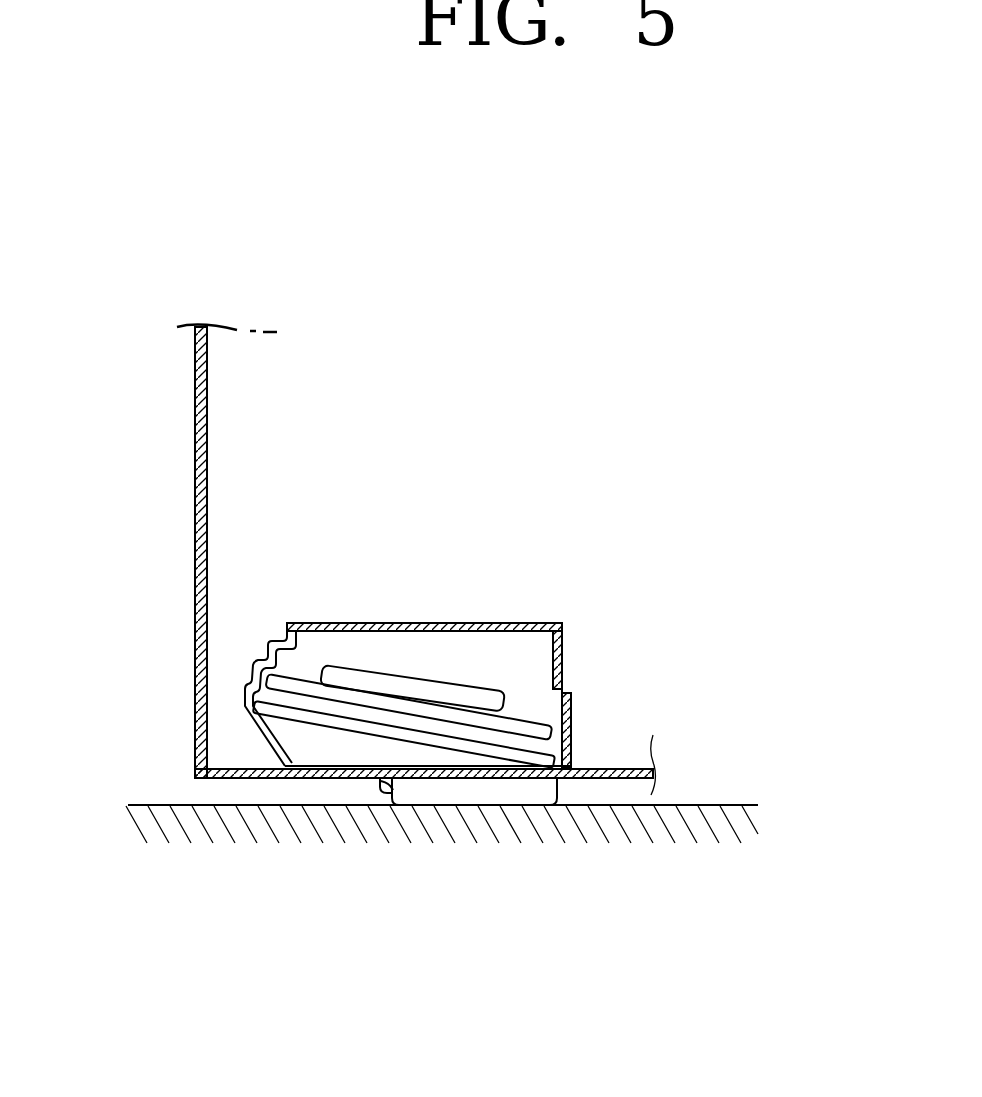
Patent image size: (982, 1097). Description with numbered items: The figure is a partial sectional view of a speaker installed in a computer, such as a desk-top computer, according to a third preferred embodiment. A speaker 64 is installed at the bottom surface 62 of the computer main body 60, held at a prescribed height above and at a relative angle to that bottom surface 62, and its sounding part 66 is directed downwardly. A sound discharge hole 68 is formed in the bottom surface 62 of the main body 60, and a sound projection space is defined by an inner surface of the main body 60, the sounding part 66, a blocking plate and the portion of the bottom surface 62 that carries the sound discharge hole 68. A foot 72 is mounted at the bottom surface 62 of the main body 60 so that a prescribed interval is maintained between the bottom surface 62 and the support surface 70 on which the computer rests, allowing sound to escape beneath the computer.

The main body 60 is at (195, 559).
The bottom surface 62 is at (617, 769).
The speaker 64 is at (392, 683).
The sounding part 66 is at (327, 706).
The sound discharge hole 68 is at (357, 773).
The support surface 70 is at (712, 805).
The foot 72 is at (527, 792).